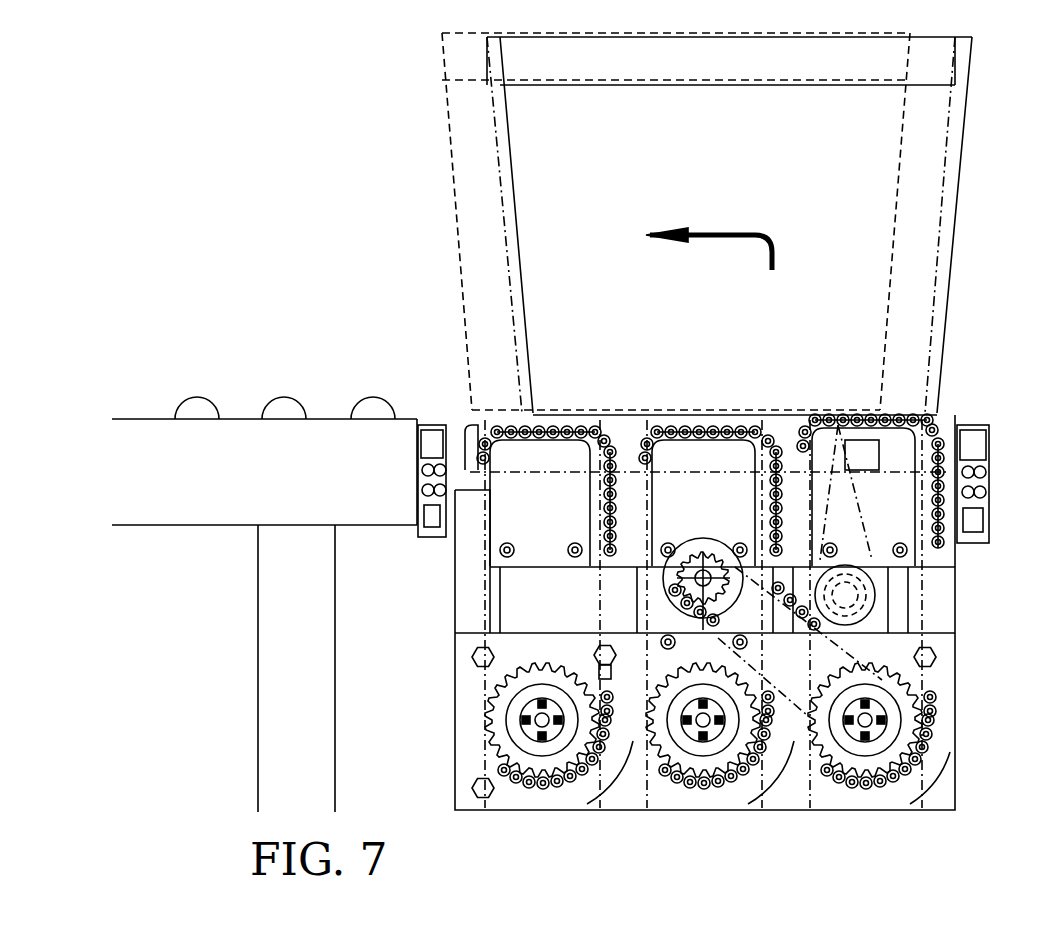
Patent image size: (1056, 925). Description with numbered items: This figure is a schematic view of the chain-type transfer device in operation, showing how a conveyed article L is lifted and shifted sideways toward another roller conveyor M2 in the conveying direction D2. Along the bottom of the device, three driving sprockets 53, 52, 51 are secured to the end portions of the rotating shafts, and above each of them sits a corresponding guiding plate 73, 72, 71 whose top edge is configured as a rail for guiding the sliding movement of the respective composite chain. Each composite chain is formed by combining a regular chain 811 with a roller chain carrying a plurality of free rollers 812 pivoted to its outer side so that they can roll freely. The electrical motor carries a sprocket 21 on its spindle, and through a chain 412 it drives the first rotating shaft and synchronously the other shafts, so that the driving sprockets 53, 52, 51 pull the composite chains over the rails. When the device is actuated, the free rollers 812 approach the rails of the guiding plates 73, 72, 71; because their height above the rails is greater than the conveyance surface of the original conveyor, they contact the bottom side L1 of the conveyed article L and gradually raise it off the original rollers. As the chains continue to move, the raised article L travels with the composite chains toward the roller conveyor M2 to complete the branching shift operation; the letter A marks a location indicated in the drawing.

The conveyed article L is at (947, 163).
The bottom side of the conveyed article L1 is at (476, 412).
The roller conveyor M2 is at (326, 388).
The conveying direction D2 is at (192, 360).
The guiding plate 73 is at (548, 450).
The guiding plate 72 is at (684, 452).
The guiding plate 71 is at (868, 452).
The free rollers 812 is at (598, 418).
The regular chain 811 is at (503, 445).
The sprocket 21 is at (662, 598).
The chain 412 is at (800, 640).
The driving sprocket 53 is at (522, 762).
The driving sprocket 52 is at (700, 765).
The driving sprocket 51 is at (856, 762).
The section line A is at (769, 775).